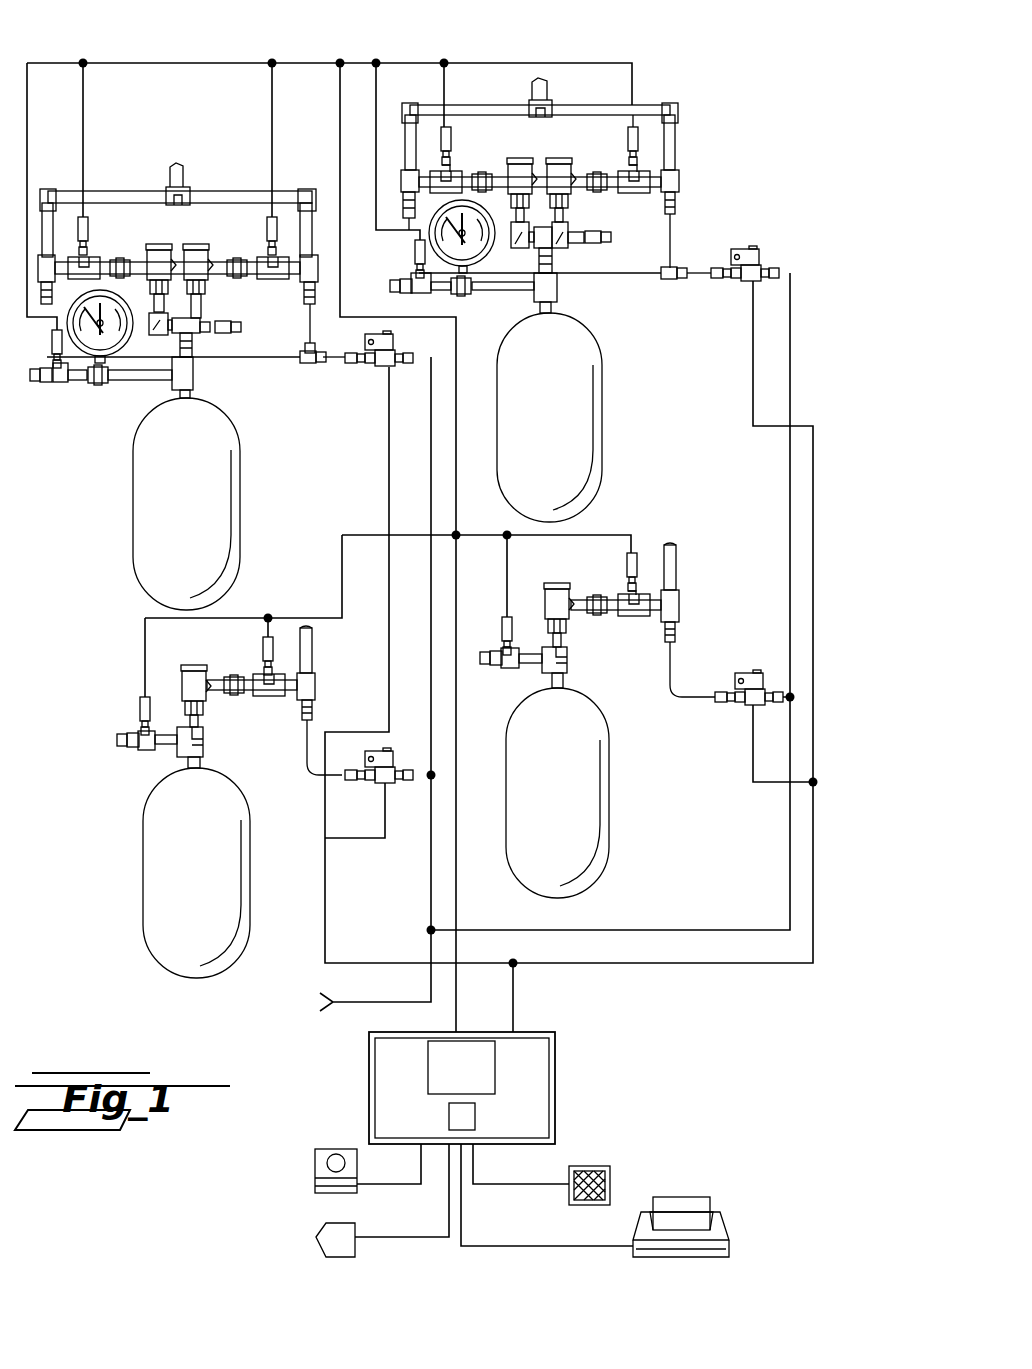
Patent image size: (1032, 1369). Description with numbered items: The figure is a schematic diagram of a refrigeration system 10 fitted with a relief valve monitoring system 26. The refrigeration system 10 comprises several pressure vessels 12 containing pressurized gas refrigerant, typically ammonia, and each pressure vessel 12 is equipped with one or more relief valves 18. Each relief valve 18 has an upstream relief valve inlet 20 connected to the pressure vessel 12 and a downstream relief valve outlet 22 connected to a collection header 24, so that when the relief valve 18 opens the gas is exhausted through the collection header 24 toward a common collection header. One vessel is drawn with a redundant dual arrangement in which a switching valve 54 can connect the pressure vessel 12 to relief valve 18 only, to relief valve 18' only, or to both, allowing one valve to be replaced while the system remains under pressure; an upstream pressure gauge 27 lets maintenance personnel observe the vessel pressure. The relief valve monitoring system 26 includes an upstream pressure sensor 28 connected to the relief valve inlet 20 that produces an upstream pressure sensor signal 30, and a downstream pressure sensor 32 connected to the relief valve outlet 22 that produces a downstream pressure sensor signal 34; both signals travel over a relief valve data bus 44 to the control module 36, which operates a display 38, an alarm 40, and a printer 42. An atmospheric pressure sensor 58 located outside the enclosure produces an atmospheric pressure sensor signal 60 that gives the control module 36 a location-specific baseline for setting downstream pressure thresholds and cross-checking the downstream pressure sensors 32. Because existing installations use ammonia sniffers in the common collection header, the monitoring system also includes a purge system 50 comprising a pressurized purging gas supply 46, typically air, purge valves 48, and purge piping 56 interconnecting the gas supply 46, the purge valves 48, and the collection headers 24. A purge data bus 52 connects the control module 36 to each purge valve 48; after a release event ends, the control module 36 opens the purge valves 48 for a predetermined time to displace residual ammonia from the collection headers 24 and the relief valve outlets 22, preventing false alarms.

The refrigeration system 10 is at (731, 48).
The pressure vessel 12 is at (602, 380).
The relief valve 18 is at (360, 422).
The relief valve 18' is at (380, 218).
The upstream relief valve inlet 20 is at (515, 218).
The downstream relief valve outlet 22 is at (497, 175).
The collection header 24 is at (548, 82).
The relief valve monitoring system 26 is at (666, 1033).
The upstream pressure gauge 27 is at (488, 265).
The upstream pressure sensor 28 is at (412, 262).
The upstream pressure sensor signal 30 is at (376, 120).
The downstream pressure sensor 32 is at (440, 140).
The downstream pressure sensor signal 34 is at (446, 88).
The control module 36 is at (556, 1081).
The display 38 is at (600, 1167).
The alarm 40 is at (313, 1170).
The printer 42 is at (683, 1197).
The relief valve data bus 44 is at (460, 1006).
The pressurized purging gas supply 46 is at (338, 1002).
The purge valve 48 is at (752, 247).
The purge system 50 is at (727, 728).
The purge data bus 52 is at (516, 1008).
The switching valve 54 is at (590, 246).
The purge piping 56 is at (688, 238).
The atmospheric pressure sensor 58 is at (316, 1237).
The atmospheric pressure sensor signal 60 is at (395, 1237).